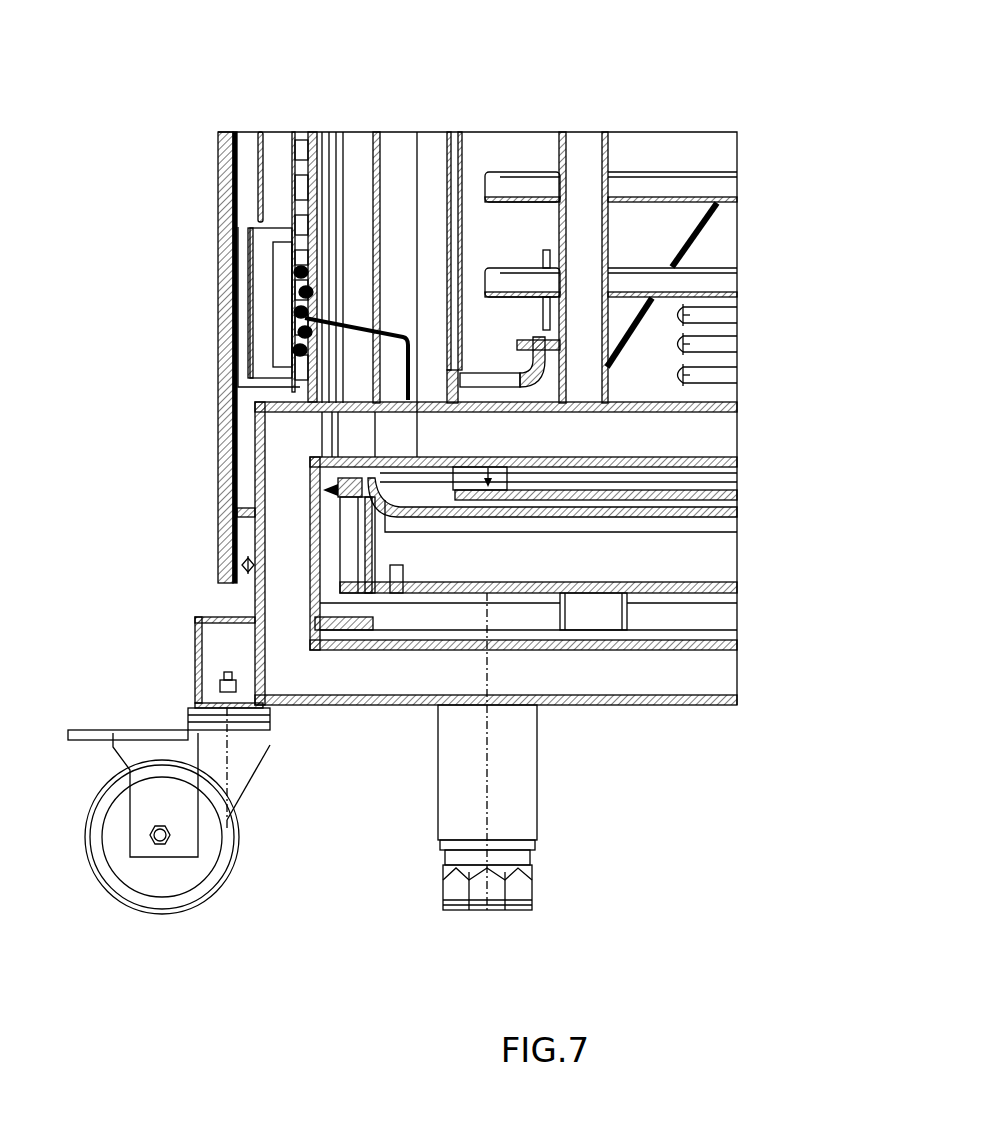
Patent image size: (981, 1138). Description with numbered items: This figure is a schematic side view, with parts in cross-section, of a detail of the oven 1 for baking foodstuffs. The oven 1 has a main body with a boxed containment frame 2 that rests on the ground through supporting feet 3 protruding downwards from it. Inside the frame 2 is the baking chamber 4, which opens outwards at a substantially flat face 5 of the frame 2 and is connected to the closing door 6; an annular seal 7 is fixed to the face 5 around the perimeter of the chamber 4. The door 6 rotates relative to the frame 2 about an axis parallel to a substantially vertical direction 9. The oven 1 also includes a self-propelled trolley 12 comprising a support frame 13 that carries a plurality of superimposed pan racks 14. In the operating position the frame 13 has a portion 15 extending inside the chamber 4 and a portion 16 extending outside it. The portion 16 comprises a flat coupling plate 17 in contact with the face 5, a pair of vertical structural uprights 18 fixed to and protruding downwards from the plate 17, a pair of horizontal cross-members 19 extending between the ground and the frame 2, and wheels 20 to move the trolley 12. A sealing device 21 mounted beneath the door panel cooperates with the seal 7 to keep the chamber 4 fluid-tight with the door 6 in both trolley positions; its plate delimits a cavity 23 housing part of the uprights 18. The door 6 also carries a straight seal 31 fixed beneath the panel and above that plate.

The oven 1 is at (688, 89).
The boxed containment frame 2 is at (365, 138).
The supporting feet 3 is at (527, 805).
The baking chamber 4 is at (625, 143).
The flat face 5 is at (300, 140).
The closing door 6 is at (222, 175).
The annular seal 7 is at (333, 147).
The vertical direction 9 is at (209, 214).
The self-propelled trolley 12 is at (664, 780).
The support frame 13 is at (624, 750).
The pan racks 14 is at (713, 190).
The portion 15 is at (713, 400).
The portion 16 is at (372, 732).
The coupling plate 17 is at (397, 330).
The vertical structural uprights 18 is at (258, 535).
The horizontal cross-members 19 is at (703, 705).
The wheels 20 is at (175, 895).
The sealing device 21 is at (274, 344).
The cavity 23 is at (245, 460).
The straight seal 31 is at (300, 318).